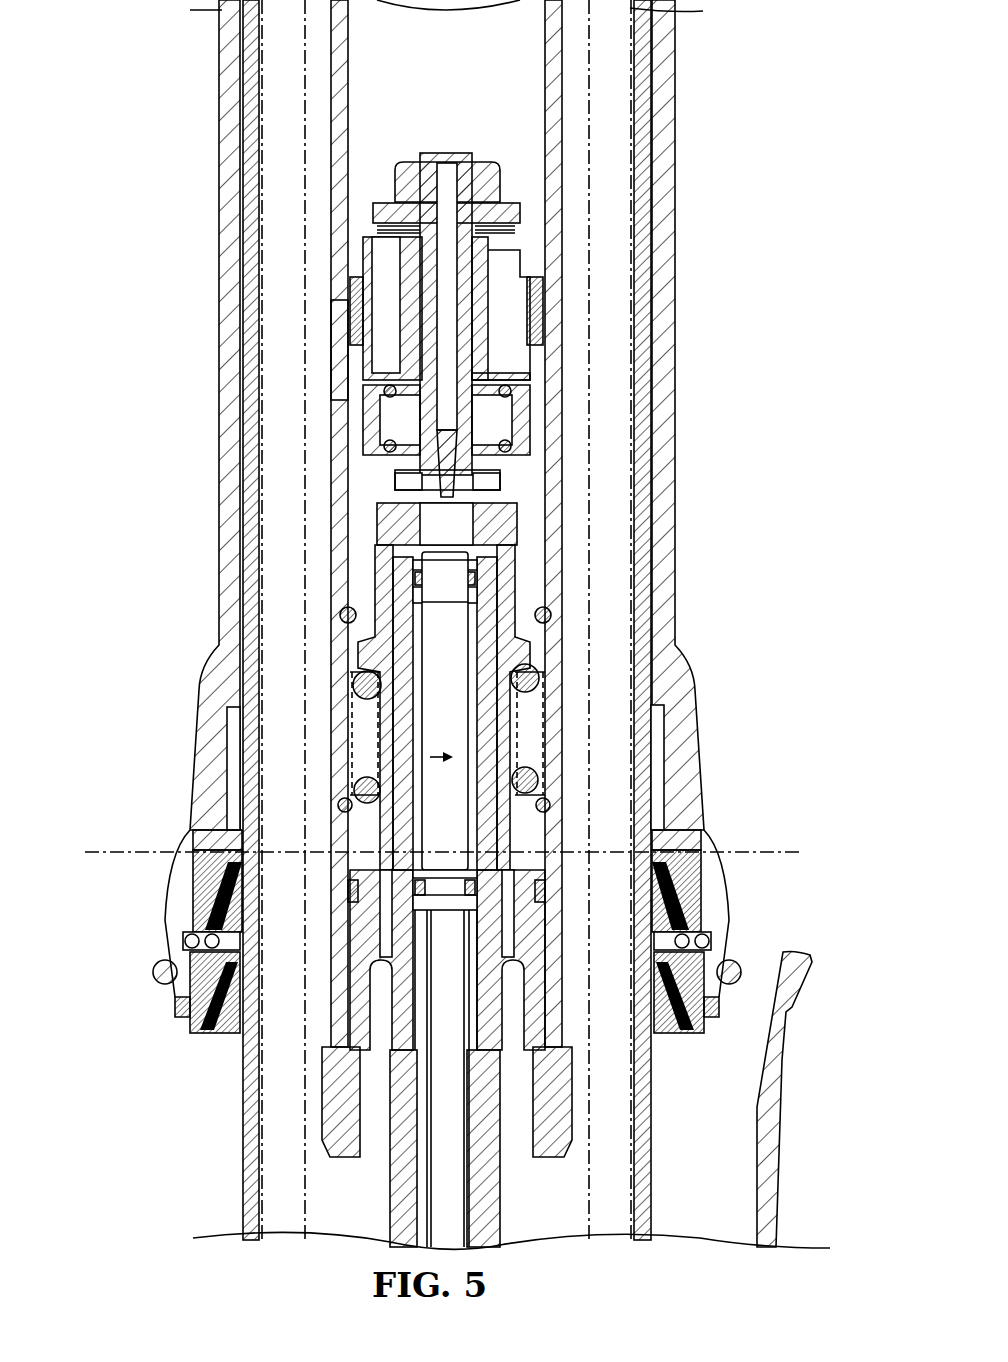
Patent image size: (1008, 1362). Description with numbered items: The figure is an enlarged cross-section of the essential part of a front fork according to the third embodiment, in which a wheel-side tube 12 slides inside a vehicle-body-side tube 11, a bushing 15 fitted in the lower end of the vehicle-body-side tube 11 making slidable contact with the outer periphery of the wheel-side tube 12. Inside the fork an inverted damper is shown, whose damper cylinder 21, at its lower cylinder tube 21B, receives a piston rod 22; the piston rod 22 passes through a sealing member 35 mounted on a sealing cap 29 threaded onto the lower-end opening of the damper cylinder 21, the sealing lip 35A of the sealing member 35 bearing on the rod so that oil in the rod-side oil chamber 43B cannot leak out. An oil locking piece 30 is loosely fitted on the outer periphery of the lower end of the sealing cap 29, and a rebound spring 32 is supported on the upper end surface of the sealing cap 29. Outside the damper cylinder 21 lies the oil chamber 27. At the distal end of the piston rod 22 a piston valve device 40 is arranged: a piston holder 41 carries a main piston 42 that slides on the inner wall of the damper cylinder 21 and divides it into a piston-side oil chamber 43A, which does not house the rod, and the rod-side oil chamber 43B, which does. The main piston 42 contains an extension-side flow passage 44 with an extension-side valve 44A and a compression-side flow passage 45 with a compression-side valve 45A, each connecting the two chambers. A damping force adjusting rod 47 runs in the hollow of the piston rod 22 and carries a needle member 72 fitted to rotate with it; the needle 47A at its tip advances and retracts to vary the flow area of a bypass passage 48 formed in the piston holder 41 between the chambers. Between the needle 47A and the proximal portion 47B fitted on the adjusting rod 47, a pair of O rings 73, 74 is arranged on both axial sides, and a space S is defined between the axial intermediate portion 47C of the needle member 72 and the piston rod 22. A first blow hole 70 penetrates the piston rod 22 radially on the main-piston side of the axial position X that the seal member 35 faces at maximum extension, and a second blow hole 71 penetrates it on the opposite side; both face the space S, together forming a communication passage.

The vehicle-body-side tube 11 is at (237, 47).
The wheel-side tube 12 is at (250, 112).
The bushing 15 is at (237, 770).
The damper cylinder 21 is at (340, 262).
The lower cylinder tube 21B is at (345, 350).
The piston rod 22 is at (380, 748).
The oil chamber 27 is at (333, 1210).
The sealing cap 29 is at (537, 1002).
The oil locking piece 30 is at (555, 1067).
The rebound spring 32 is at (442, 638).
The sealing member 35 is at (650, 870).
The sealing lip 35A is at (540, 810).
The piston valve device 40 is at (484, 130).
The piston holder 41 is at (650, 700).
The main piston 42 is at (540, 310).
The piston-side oil chamber 43A is at (460, 47).
The rod-side oil chamber 43B is at (525, 497).
The extension-side flow passage 44 is at (390, 300).
The extension-side valve 44A is at (372, 213).
The compression-side flow passage 45 is at (510, 258).
The compression-side valve 45A is at (530, 375).
The damping force adjusting rod 47 is at (450, 1210).
The needle 47A is at (477, 578).
The proximal portion 47B is at (450, 1003).
The axial intermediate portion 47C is at (413, 560).
The bypass passage 48 is at (445, 483).
The first blow hole 70 is at (367, 683).
The second blow hole 71 is at (385, 882).
The needle member 72 is at (402, 722).
The O ring 73 is at (507, 637).
The O ring 74 is at (650, 915).
The space S is at (417, 808).
The axial position X is at (431, 852).